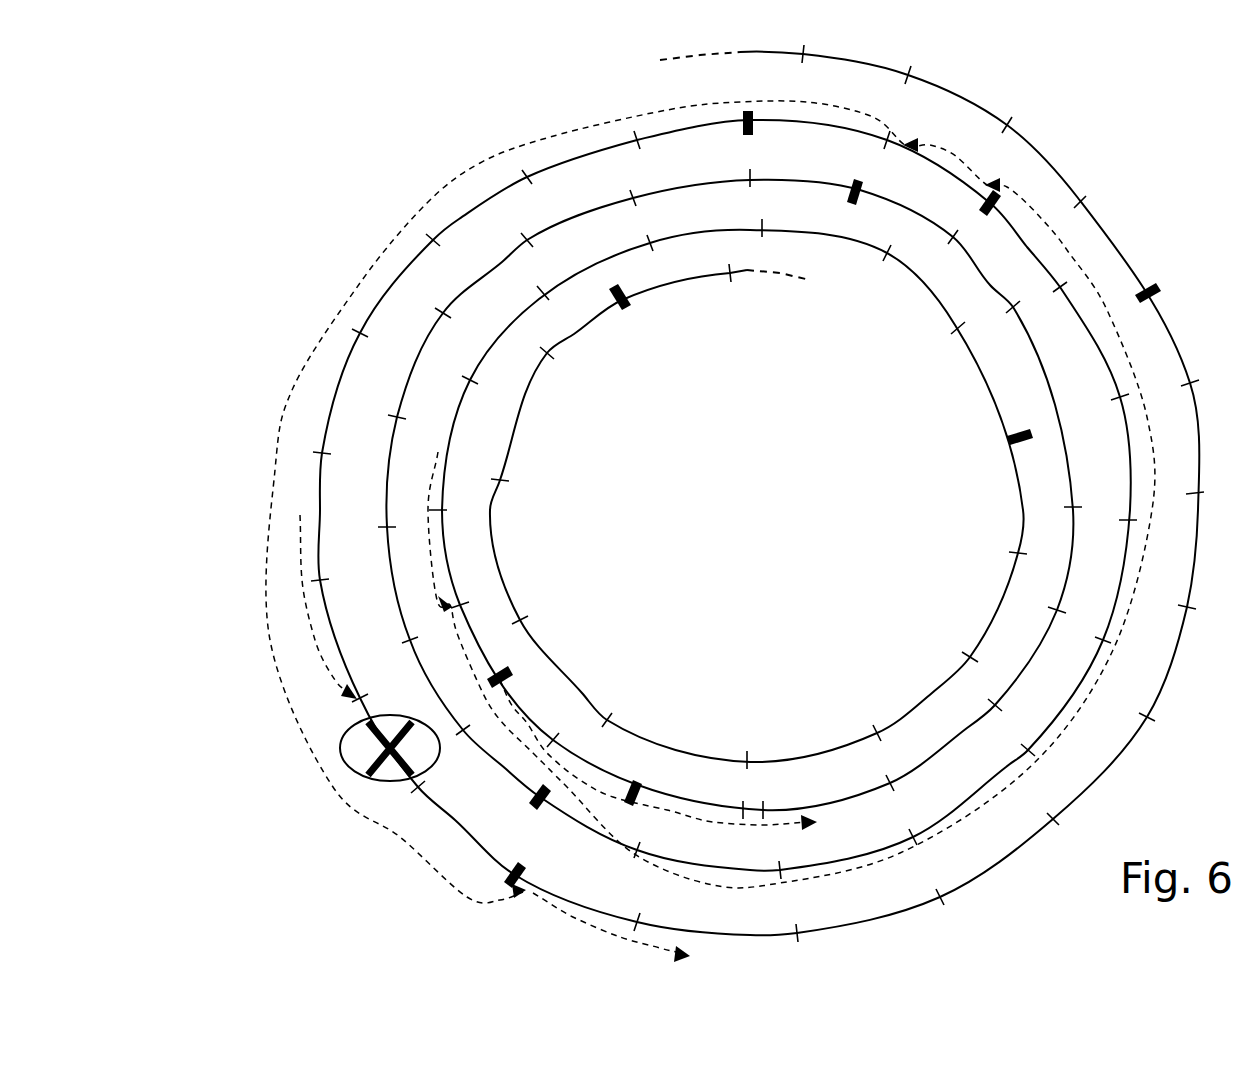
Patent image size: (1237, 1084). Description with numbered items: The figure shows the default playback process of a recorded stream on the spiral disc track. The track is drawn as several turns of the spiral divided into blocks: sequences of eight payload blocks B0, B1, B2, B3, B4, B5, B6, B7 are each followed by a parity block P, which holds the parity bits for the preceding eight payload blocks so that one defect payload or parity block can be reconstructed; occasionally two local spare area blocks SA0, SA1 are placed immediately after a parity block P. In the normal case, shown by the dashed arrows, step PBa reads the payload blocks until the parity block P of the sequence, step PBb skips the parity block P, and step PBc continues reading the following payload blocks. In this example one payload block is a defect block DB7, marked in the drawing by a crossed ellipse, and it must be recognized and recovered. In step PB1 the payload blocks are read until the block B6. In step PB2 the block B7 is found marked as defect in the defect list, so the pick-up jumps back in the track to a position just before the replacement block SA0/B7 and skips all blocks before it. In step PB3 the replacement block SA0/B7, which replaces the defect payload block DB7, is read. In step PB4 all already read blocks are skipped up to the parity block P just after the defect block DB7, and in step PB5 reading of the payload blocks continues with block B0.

The parity block P is at (814, 499).
The playback step PB1 is at (305, 627).
The playback step PB2 is at (1040, 215).
The playback step PB3 is at (952, 152).
The playback step PB4 is at (520, 130).
The playback step PB5 is at (605, 927).
The playback step PBa is at (428, 495).
The playback step PBb is at (492, 658).
The playback step PBc is at (743, 807).
The defect block DB7 is at (340, 750).
The local spare area block SA0 is at (734, 450).
The local spare area block SA1 is at (697, 450).
The payload block B0 is at (842, 523).
The payload block B1 is at (777, 543).
The payload block B2 is at (709, 508).
The payload block B3 is at (709, 458).
The payload block B4 is at (717, 525).
The payload block B5 is at (747, 543).
The payload block B6 is at (772, 518).
The payload block B7 is at (782, 440).